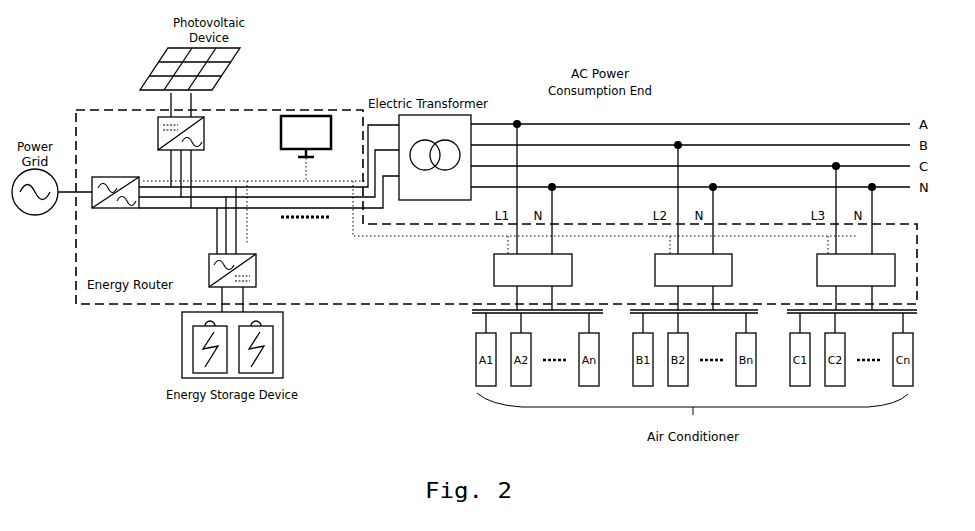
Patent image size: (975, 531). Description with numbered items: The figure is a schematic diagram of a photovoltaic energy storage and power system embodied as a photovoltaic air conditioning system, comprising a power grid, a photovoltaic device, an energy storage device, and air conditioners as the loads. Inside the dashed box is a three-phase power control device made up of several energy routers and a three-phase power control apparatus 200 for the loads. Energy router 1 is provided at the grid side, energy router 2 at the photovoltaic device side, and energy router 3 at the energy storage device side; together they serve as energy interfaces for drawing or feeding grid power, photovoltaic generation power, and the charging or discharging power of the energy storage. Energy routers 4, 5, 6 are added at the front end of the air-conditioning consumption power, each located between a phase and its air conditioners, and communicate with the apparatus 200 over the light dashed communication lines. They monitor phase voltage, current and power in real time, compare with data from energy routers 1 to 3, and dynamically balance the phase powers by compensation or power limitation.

The three-phase power control apparatus 200 is at (312, 148).
The energy router 1 is at (115, 208).
The energy router 2 is at (155, 134).
The energy router 3 is at (263, 270).
The energy router 4 is at (533, 270).
The energy router 5 is at (693, 270).
The energy router 6 is at (856, 270).